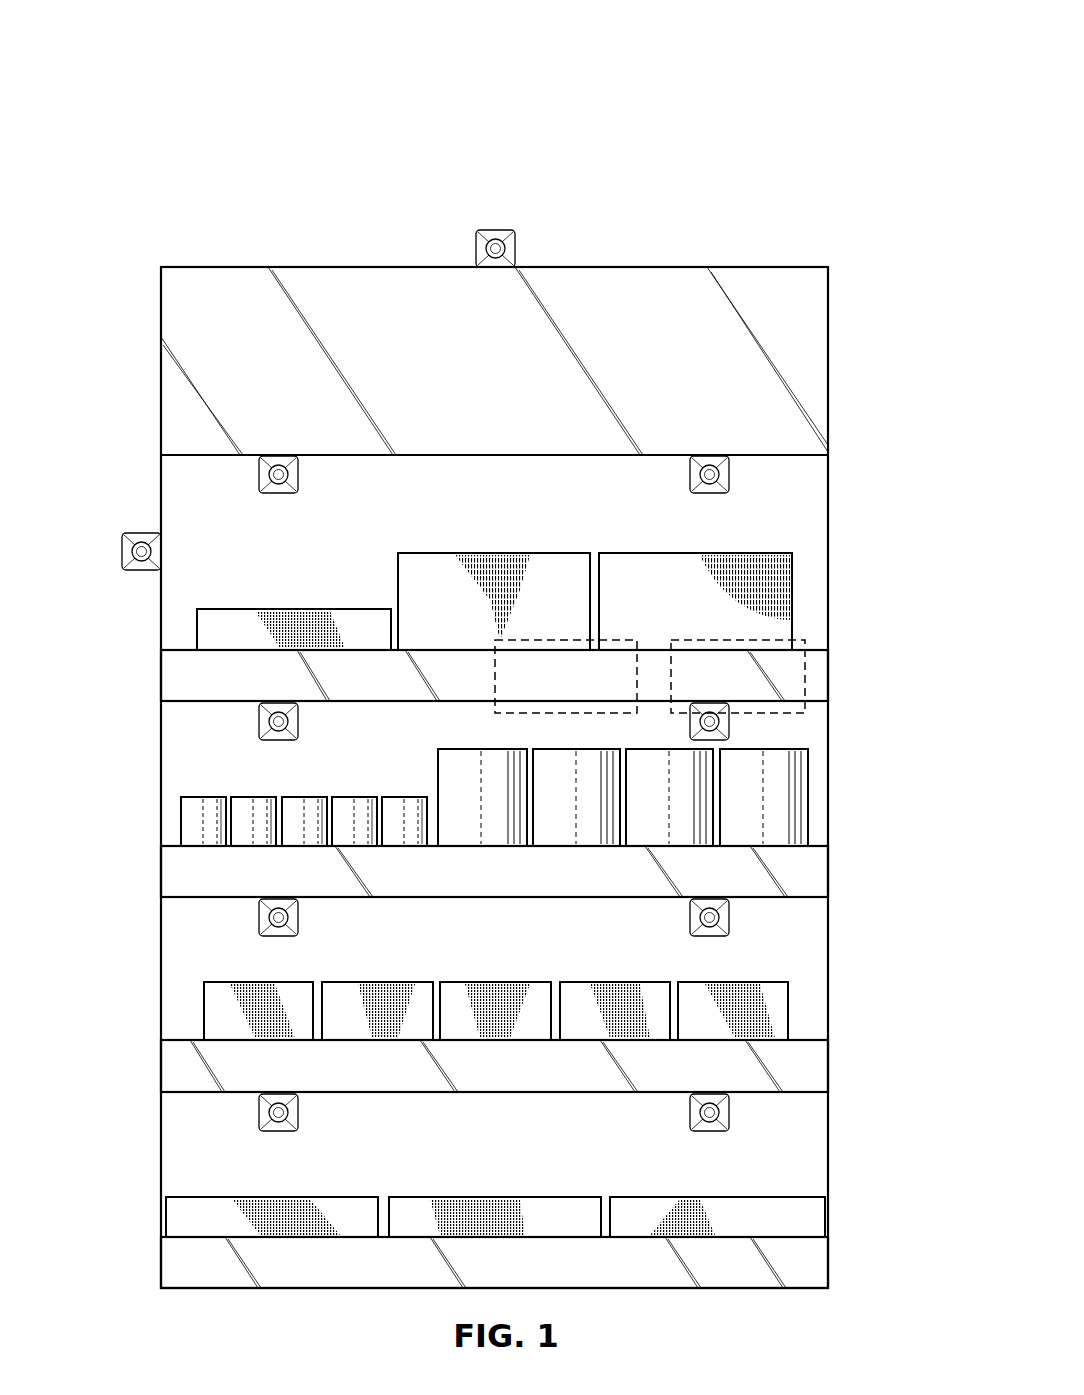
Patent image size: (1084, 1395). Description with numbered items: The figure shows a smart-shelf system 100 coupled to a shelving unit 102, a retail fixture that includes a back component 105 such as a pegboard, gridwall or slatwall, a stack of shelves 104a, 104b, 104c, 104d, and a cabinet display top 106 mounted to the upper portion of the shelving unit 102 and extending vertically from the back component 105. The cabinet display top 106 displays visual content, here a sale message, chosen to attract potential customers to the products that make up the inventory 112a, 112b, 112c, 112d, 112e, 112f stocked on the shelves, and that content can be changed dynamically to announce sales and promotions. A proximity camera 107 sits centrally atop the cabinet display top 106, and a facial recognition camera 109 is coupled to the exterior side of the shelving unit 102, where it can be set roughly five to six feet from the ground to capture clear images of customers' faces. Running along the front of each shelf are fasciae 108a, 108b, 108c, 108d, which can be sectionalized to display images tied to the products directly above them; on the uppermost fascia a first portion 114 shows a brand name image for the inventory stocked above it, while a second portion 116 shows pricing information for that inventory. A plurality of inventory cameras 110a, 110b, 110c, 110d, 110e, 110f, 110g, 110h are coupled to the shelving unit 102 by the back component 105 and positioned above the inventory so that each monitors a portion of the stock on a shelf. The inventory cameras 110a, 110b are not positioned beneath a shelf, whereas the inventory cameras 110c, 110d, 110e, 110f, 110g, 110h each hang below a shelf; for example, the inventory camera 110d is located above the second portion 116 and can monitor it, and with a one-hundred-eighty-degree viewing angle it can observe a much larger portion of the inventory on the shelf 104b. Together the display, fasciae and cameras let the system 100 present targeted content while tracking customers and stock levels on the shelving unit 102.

The smart-shelf system 100 is at (310, 148).
The shelving unit 102 is at (885, 452).
The shelf 104a is at (818, 648).
The shelf 104b is at (825, 843).
The shelf 104c is at (810, 1038).
The shelf 104d is at (790, 1233).
The back component 105 is at (788, 480).
The cabinet display top 106 is at (212, 315).
The proximity camera 107 is at (493, 228).
The fascia 108a is at (180, 663).
The fascia 108b is at (182, 858).
The fascia 108c is at (180, 1053).
The fascia 108d is at (180, 1266).
The facial recognition camera 109 is at (122, 552).
The inventory camera 110a is at (300, 472).
The inventory camera 110b is at (689, 471).
The inventory camera 110c is at (258, 719).
The inventory camera 110d is at (730, 719).
The inventory camera 110e is at (258, 916).
The inventory camera 110f is at (730, 915).
The inventory camera 110g is at (258, 1111).
The inventory camera 110h is at (730, 1111).
The inventory 112a is at (292, 607).
The inventory 112b is at (630, 552).
The inventory 112c is at (203, 796).
The inventory 112d is at (808, 771).
The inventory 112e is at (497, 980).
The inventory 112f is at (200, 1197).
The first portion 114 is at (568, 714).
The second portion 116 is at (806, 675).